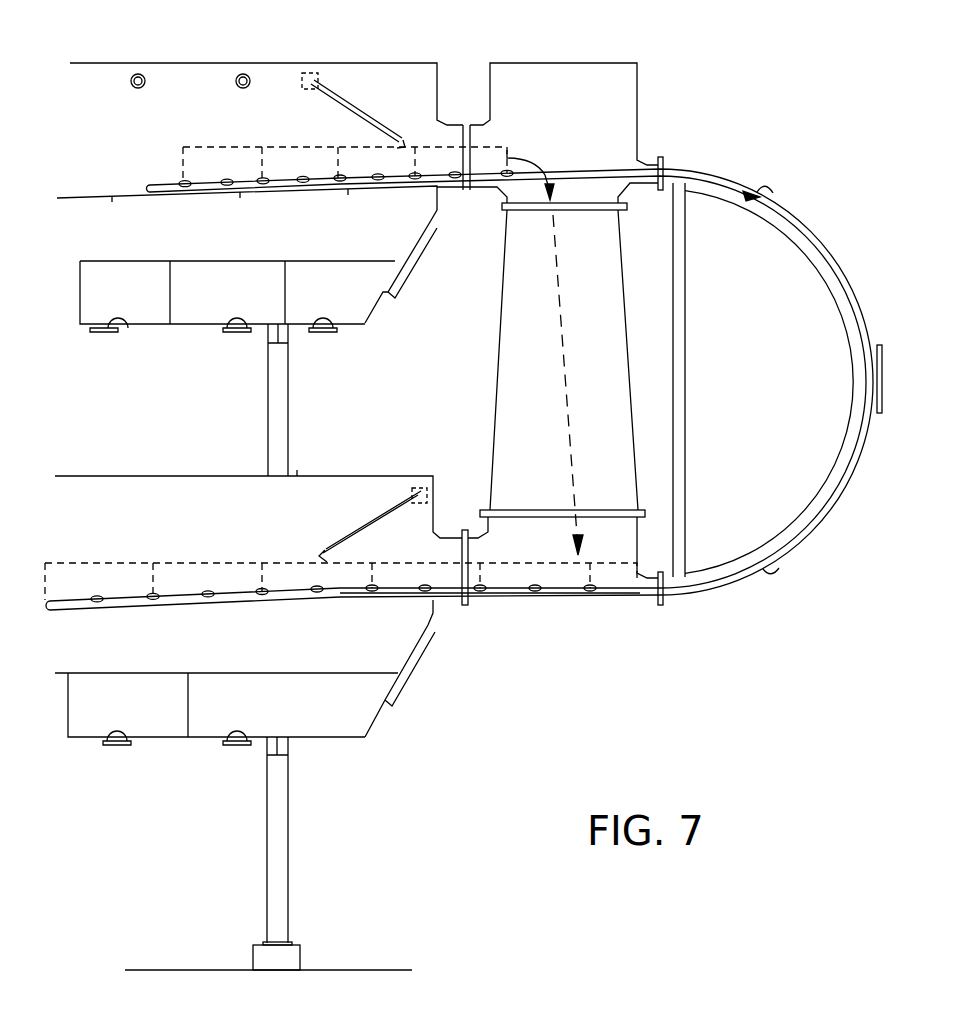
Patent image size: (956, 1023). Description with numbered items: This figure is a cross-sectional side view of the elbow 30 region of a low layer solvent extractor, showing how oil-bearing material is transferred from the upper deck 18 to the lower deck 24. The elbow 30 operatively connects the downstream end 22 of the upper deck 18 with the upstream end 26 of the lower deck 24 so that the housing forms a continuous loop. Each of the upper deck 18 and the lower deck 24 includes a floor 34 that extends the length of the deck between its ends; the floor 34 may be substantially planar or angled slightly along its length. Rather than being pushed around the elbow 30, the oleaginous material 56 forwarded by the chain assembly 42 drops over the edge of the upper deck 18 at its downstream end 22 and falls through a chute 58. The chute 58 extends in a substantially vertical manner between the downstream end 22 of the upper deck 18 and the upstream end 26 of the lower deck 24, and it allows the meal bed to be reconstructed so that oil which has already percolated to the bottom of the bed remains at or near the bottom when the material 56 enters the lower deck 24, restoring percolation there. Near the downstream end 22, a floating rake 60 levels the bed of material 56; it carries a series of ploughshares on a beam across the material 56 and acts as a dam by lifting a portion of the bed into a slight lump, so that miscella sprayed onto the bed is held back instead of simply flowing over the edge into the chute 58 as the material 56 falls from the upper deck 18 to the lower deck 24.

The upper deck 18 is at (190, 86).
The floating rake 60 is at (316, 78).
The downstream end 22 is at (432, 137).
The oleaginous material 56 is at (205, 162).
The chute 58 is at (513, 395).
The elbow 30 is at (762, 392).
The lower deck 24 is at (108, 503).
The floor 34 is at (180, 604).
The upstream end 26 is at (443, 550).
The chain assembly 42 is at (618, 594).